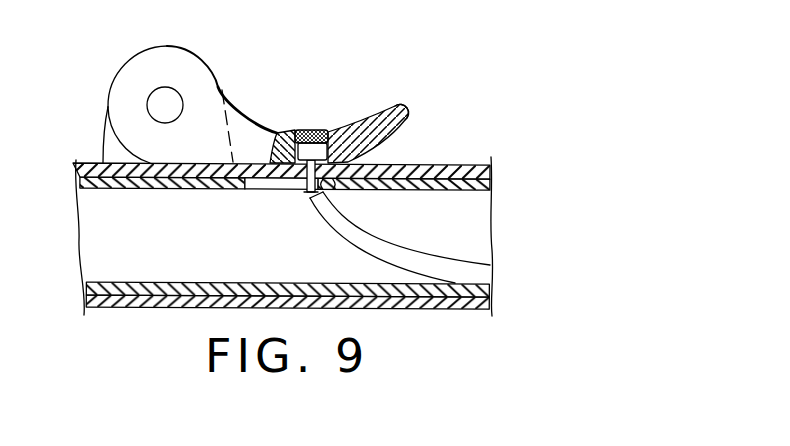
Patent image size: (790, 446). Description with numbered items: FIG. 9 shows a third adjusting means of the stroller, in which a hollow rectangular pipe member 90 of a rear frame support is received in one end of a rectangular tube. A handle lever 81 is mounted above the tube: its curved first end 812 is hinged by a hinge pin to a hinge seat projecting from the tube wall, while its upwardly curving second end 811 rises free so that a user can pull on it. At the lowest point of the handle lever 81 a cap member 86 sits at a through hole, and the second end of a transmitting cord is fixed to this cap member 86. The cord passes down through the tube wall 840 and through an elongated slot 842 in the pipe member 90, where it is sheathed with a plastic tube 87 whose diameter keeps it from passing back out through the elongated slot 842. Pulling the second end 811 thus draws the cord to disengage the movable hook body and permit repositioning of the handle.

The curved first end 812 is at (122, 85).
The handle lever 81 is at (383, 108).
The upwardly curving second end 811 is at (406, 113).
The cap member 86 is at (310, 130).
The upper rail plate 840 is at (375, 167).
The elongated slot 842 is at (273, 188).
The hollow rectangular pipe member 90 is at (125, 188).
The plastic tube 87 is at (450, 270).